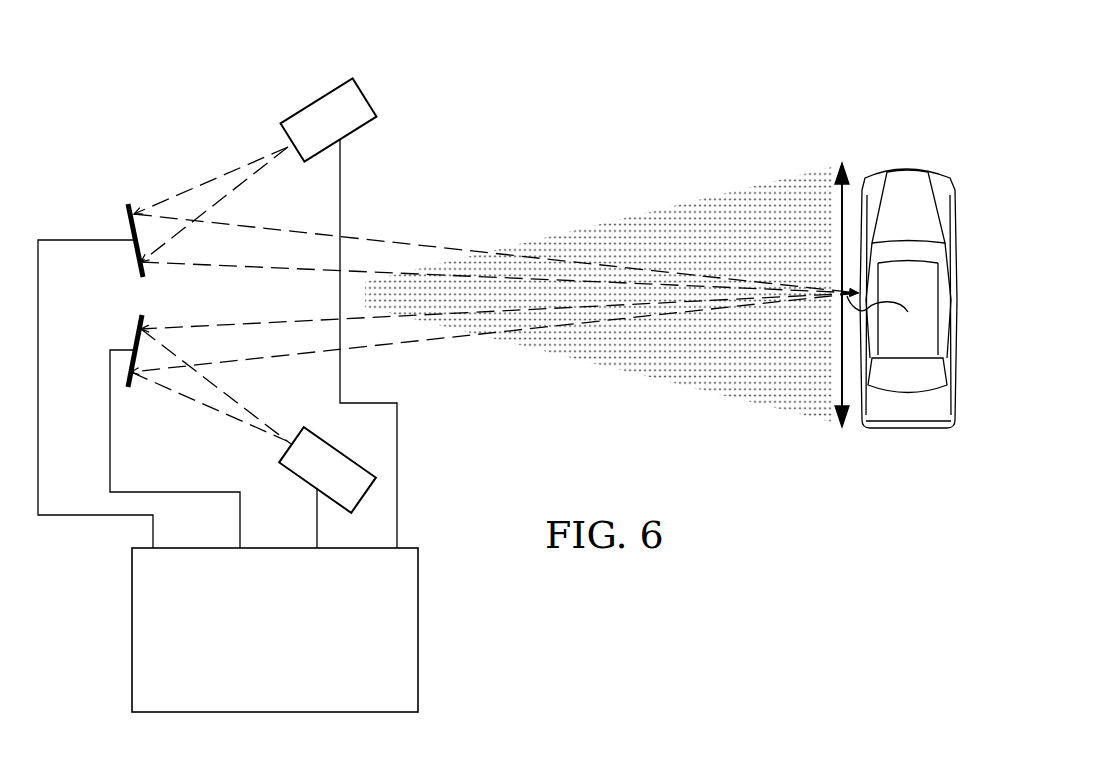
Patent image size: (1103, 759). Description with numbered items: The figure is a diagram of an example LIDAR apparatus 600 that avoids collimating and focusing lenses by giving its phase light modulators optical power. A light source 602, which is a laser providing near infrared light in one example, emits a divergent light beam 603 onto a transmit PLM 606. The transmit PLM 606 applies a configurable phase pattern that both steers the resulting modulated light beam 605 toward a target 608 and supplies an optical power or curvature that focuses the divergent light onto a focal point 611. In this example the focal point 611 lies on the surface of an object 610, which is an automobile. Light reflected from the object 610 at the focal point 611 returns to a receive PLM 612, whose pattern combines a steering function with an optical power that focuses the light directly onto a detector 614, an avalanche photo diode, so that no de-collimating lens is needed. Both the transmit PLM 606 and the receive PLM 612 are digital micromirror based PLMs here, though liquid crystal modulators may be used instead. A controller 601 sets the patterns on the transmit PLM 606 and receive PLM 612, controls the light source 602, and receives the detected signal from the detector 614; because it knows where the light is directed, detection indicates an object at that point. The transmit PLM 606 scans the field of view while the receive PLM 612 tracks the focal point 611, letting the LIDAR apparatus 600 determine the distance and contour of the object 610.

The LIDAR apparatus 600 is at (690, 95).
The controller 601 is at (293, 641).
The light source 602 is at (313, 103).
The divergent light beam 603 is at (212, 178).
The modulated light beam 605 is at (405, 248).
The transmit PLM 606 is at (130, 230).
The target 608 is at (848, 170).
The object 610 is at (910, 163).
The focal point 611 is at (886, 319).
The receive PLM 612 is at (134, 340).
The detector 614 is at (297, 480).